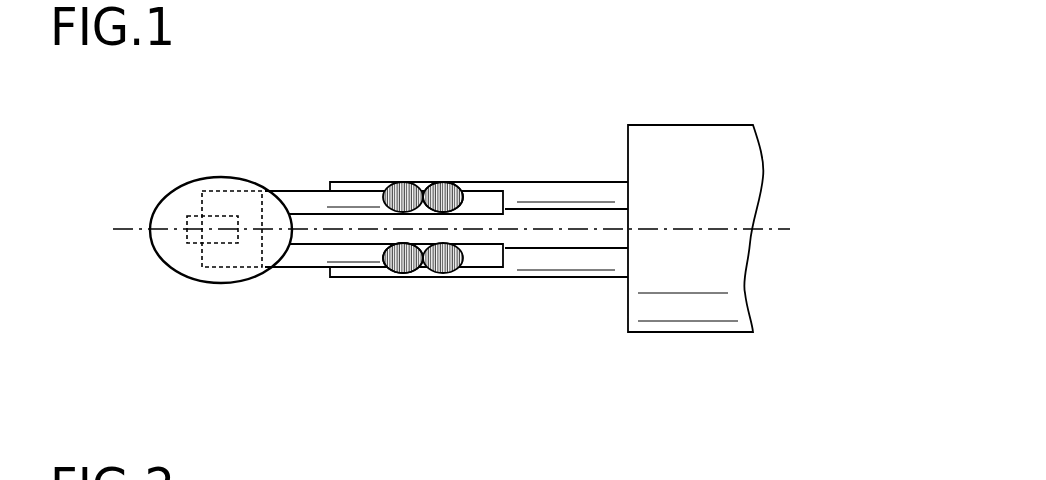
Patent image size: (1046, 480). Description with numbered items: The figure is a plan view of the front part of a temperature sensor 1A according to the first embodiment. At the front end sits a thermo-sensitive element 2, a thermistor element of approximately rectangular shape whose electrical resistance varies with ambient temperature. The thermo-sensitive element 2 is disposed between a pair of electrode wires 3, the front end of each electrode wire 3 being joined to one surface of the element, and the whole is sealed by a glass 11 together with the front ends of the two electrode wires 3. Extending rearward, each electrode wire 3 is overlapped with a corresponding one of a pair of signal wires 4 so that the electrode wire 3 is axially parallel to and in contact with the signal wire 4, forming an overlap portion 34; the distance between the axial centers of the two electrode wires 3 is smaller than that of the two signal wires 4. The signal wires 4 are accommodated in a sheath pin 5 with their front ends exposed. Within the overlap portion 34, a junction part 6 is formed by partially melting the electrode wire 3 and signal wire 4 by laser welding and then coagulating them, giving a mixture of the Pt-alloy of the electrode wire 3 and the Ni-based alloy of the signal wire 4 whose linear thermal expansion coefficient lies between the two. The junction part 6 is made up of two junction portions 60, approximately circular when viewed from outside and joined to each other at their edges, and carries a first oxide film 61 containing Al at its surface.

The temperature sensor 1A is at (298, 385).
The glass 11 is at (190, 182).
The thermo-sensitive element 2 is at (194, 243).
The electrode wire 3 is at (312, 203).
The overlap portion 34 is at (455, 287).
The signal wire 4 is at (562, 195).
The sheath pin 5 is at (695, 147).
The junction part 6 is at (438, 95).
The junction portion 60 is at (391, 183).
The first oxide film 61 is at (445, 183).